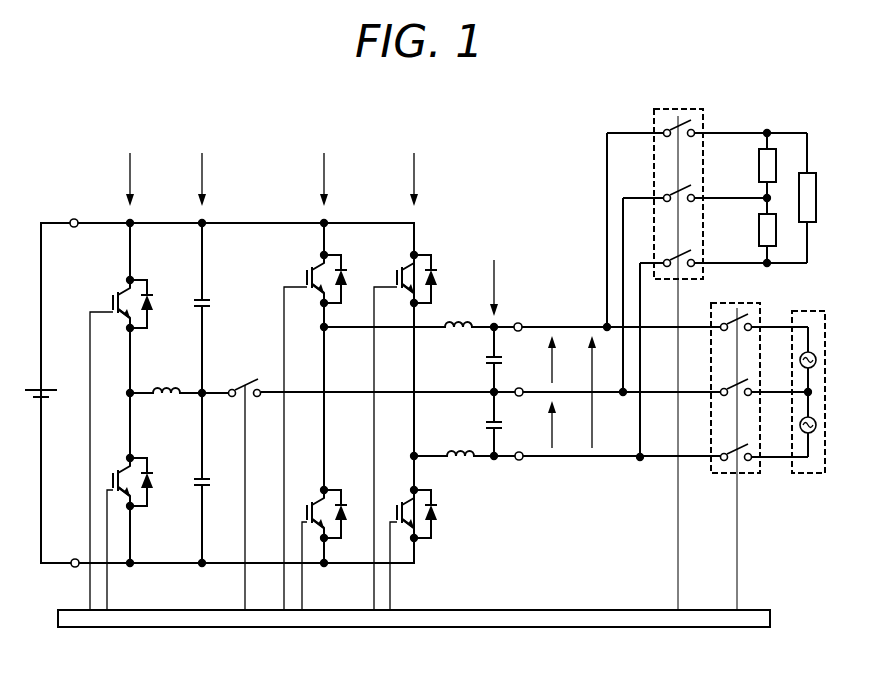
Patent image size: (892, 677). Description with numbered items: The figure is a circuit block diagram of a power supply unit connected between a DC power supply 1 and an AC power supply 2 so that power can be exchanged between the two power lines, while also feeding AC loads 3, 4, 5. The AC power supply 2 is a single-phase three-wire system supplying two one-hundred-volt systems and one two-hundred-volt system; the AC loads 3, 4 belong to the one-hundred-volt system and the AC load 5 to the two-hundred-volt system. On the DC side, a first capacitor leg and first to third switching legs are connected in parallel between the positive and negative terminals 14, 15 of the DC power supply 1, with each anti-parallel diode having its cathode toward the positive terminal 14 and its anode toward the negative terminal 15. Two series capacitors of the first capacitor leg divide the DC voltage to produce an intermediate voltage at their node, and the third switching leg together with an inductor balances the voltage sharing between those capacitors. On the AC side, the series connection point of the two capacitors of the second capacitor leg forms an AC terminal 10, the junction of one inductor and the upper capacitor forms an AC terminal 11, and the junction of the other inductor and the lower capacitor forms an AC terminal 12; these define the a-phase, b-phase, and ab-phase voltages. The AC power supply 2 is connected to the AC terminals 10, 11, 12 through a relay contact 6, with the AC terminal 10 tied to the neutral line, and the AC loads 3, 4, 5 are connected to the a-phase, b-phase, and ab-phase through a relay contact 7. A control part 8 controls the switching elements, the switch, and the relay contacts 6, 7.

The DC power supply 1 is at (49, 385).
The AC power supply 2 is at (808, 474).
The AC load 3 is at (757, 165).
The AC load 4 is at (757, 230).
The AC load 5 is at (809, 223).
The relay contact 6 is at (745, 474).
The relay contact 7 is at (704, 118).
The control part 8 is at (547, 607).
The AC terminal 10 is at (517, 389).
The AC terminal 11 is at (516, 324).
The AC terminal 12 is at (517, 453).
The positive terminal 14 is at (70, 217).
The negative terminal 15 is at (73, 566).